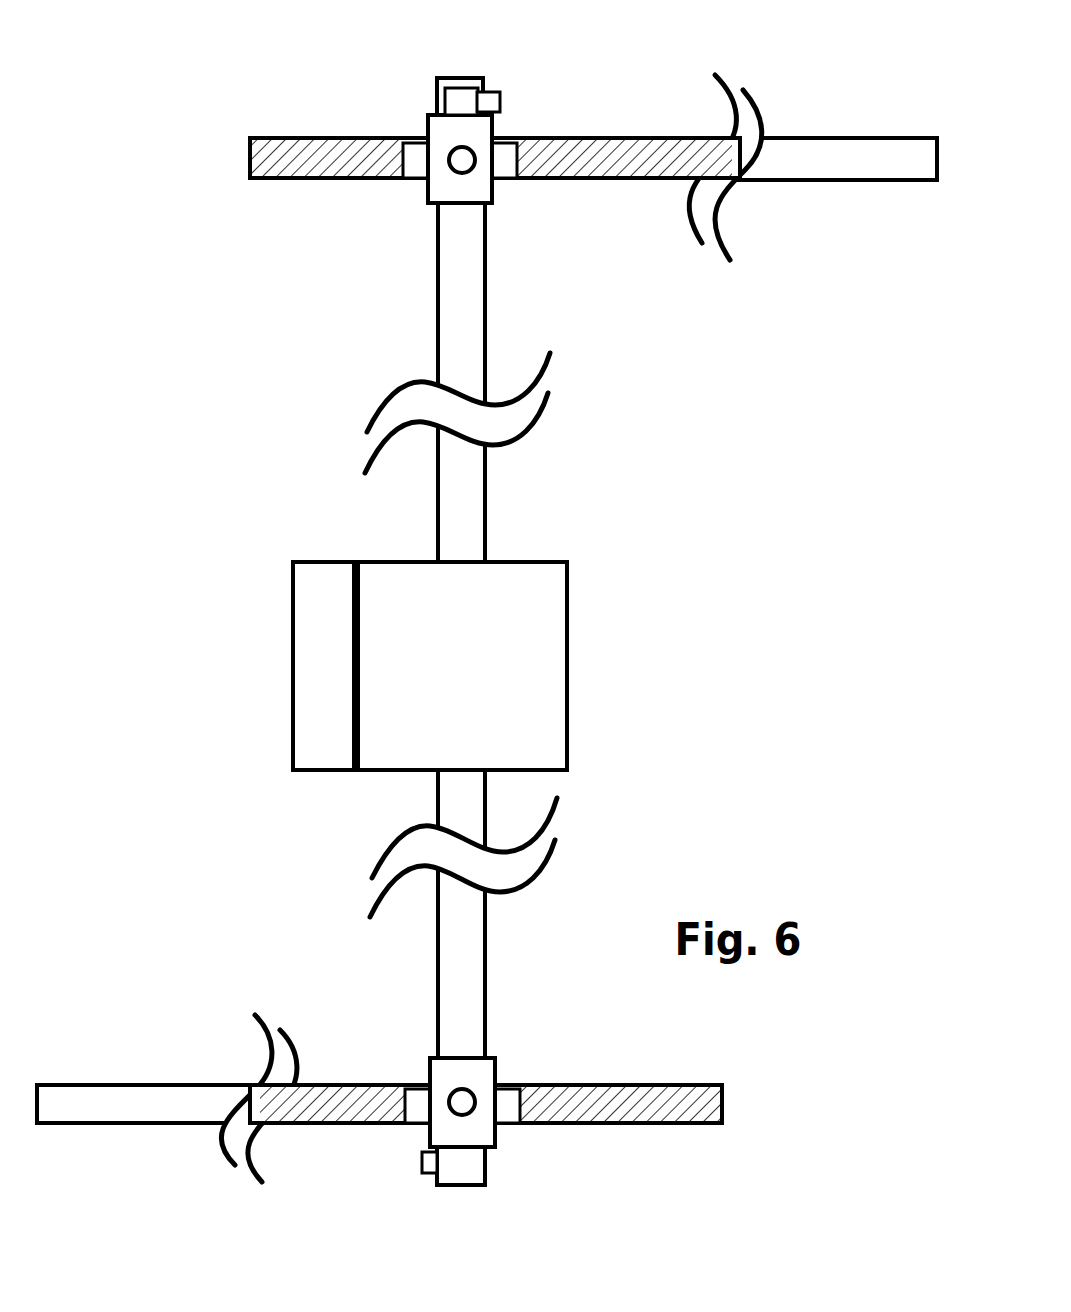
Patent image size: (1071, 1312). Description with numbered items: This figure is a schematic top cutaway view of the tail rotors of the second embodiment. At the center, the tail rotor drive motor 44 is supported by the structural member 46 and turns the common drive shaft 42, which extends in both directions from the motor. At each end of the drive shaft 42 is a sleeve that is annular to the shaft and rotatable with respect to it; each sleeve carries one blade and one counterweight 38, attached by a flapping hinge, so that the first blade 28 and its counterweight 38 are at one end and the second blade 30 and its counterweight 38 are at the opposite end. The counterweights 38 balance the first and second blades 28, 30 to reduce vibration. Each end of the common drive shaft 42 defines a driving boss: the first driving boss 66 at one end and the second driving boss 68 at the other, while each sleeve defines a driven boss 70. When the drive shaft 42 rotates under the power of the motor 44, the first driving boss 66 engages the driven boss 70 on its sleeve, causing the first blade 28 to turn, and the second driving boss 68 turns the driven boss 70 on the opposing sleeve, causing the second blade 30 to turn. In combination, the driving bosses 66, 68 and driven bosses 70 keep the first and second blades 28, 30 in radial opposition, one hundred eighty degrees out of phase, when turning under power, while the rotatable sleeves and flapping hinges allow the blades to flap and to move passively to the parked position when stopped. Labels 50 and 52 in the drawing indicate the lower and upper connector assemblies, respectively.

The first blade 28 is at (155, 1085).
The second blade 30 is at (823, 138).
The counterweight 38 is at (305, 138).
The drive shaft 42 is at (462, 78).
The tail rotor drive motor 44 is at (492, 685).
The structural member 46 is at (320, 658).
The lower connector assembly 50 is at (466, 1056).
The upper connector assembly 52 is at (417, 155).
The first driving boss 66 is at (422, 1157).
The second driving boss 68 is at (498, 98).
The driven boss 70 is at (462, 108).